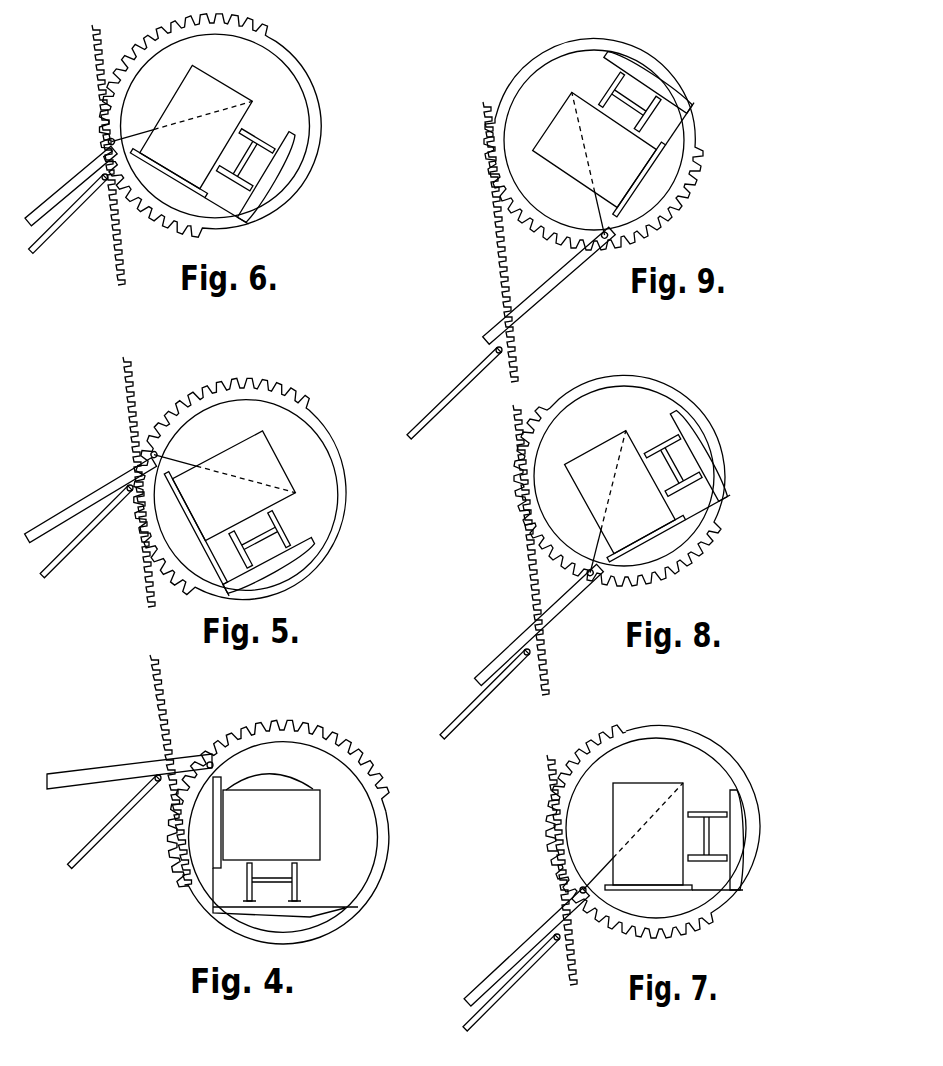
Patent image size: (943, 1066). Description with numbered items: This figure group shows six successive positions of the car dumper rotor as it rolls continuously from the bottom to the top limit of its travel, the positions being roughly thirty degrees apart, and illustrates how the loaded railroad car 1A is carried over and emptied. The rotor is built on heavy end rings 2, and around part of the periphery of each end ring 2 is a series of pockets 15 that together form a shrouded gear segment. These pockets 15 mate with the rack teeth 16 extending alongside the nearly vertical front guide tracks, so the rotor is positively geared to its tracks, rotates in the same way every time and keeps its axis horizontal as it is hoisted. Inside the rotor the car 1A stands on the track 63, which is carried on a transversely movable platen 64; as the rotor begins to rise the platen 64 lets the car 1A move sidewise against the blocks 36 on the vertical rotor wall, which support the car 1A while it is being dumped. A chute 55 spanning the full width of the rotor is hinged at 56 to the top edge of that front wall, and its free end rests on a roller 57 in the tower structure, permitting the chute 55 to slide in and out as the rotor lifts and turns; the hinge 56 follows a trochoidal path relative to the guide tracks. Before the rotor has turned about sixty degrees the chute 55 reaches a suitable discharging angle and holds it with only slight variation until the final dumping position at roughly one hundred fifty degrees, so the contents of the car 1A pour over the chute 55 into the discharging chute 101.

In FIG. 6, the railroad car 1A is at (232, 92).
In FIG. 5, the railroad car 1A is at (282, 472).
In FIG. 4, the railroad car 1A is at (320, 826).
In FIG. 9, the railroad car 1A is at (557, 116).
In FIG. 8, the railroad car 1A is at (574, 458).
In FIG. 7, the railroad car 1A is at (672, 788).
In FIG. 5, the end ring 2 is at (330, 456).
In FIG. 6, the pocket 15 is at (180, 227).
In FIG. 5, the pocket 15 is at (200, 393).
In FIG. 4, the pocket 15 is at (279, 821).
In FIG. 9, the pocket 15 is at (552, 237).
In FIG. 8, the pocket 15 is at (613, 577).
In FIG. 7, the pocket 15 is at (612, 733).
In FIG. 6, the rack tooth 16 is at (98, 34).
In FIG. 5, the rack tooth 16 is at (133, 370).
In FIG. 4, the rack tooth 16 is at (158, 672).
In FIG. 9, the rack tooth 16 is at (484, 105).
In FIG. 8, the rack tooth 16 is at (520, 410).
In FIG. 7, the rack tooth 16 is at (548, 755).
In FIG. 6, the block 36 is at (172, 172).
In FIG. 5, the block 36 is at (192, 515).
In FIG. 4, the block 36 is at (222, 824).
In FIG. 9, the block 36 is at (625, 197).
In FIG. 8, the block 36 is at (630, 530).
In FIG. 7, the block 36 is at (640, 885).
In FIG. 6, the chute 55 is at (85, 178).
In FIG. 5, the chute 55 is at (103, 482).
In FIG. 4, the chute 55 is at (88, 772).
In FIG. 9, the chute 55 is at (556, 264).
In FIG. 8, the chute 55 is at (527, 622).
In FIG. 7, the chute 55 is at (532, 936).
In FIG. 4, the hinge 56 is at (222, 756).
In FIG. 6, the roller 57 is at (105, 182).
In FIG. 5, the roller 57 is at (130, 493).
In FIG. 4, the roller 57 is at (158, 783).
In FIG. 9, the roller 57 is at (503, 347).
In FIG. 8, the roller 57 is at (526, 656).
In FIG. 7, the roller 57 is at (555, 942).
In FIG. 6, the track 63 is at (270, 150).
In FIG. 5, the track 63 is at (290, 543).
In FIG. 4, the track 63 is at (300, 899).
In FIG. 9, the track 63 is at (614, 72).
In FIG. 8, the track 63 is at (670, 432).
In FIG. 7, the track 63 is at (724, 810).
In FIG. 6, the platen 64 is at (280, 170).
In FIG. 5, the platen 64 is at (287, 557).
In FIG. 4, the platen 64 is at (300, 907).
In FIG. 9, the platen 64 is at (650, 86).
In FIG. 8, the platen 64 is at (700, 451).
In FIG. 7, the platen 64 is at (737, 840).
In FIG. 6, the discharging chute 101 is at (48, 232).
In FIG. 5, the discharging chute 101 is at (80, 542).
In FIG. 4, the discharging chute 101 is at (118, 830).
In FIG. 9, the discharging chute 101 is at (474, 385).
In FIG. 8, the discharging chute 101 is at (486, 700).
In FIG. 7, the discharging chute 101 is at (512, 985).